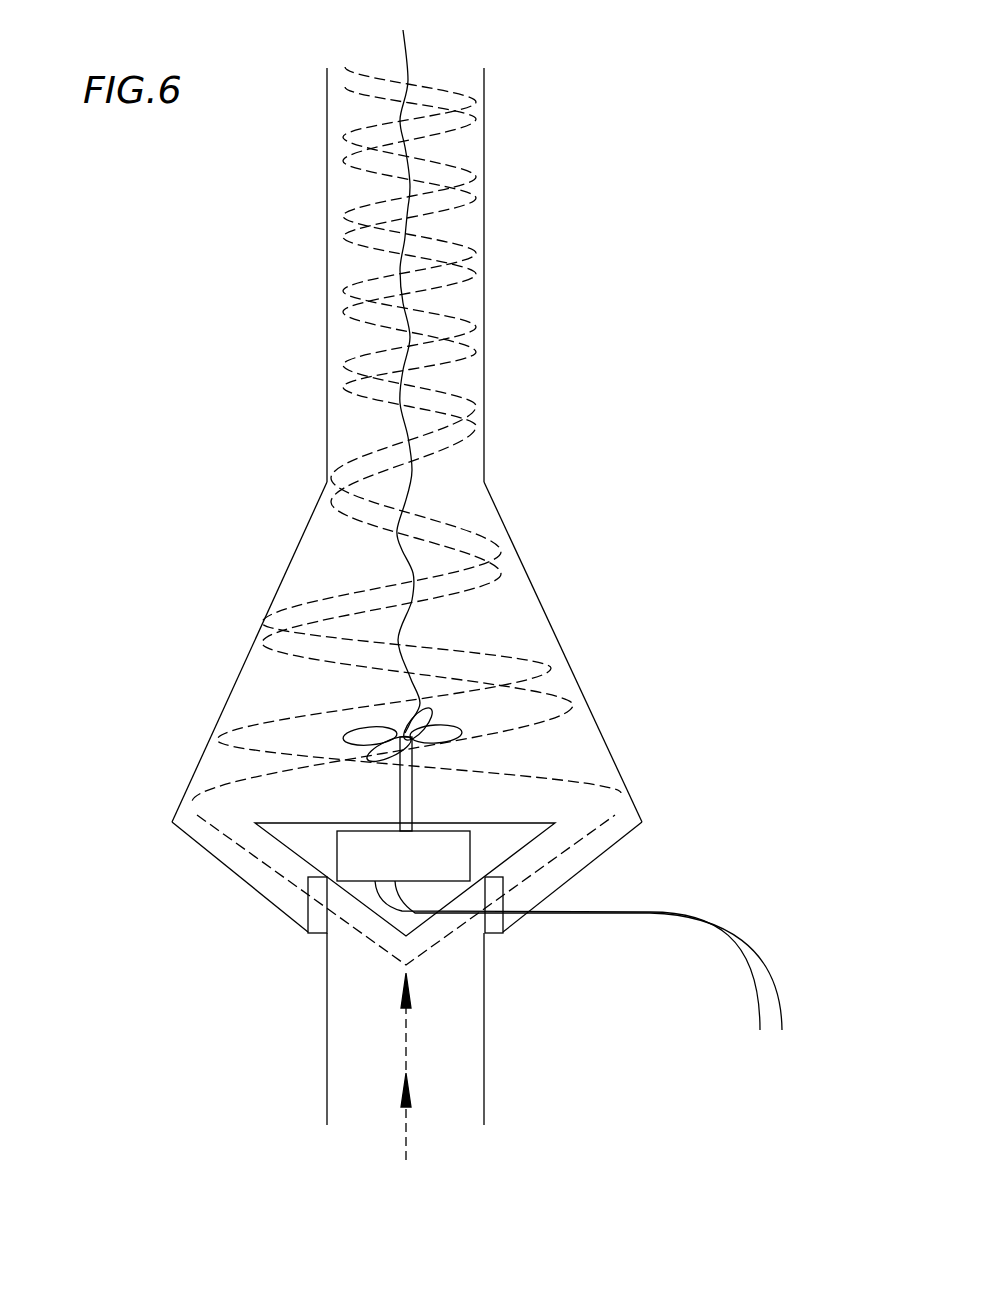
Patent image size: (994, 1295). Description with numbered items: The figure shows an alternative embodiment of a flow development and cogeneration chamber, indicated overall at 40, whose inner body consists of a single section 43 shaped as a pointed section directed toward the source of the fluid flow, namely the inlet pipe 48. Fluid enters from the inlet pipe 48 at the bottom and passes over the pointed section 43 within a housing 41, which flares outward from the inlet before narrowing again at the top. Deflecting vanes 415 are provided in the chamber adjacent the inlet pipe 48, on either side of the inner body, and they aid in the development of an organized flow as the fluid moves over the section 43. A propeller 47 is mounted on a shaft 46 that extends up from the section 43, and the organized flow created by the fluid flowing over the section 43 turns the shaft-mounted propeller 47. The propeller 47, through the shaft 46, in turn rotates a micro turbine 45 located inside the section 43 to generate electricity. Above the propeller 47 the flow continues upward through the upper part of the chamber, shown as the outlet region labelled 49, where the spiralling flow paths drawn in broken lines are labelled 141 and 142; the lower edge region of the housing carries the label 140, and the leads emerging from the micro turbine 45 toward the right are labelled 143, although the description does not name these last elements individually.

The flow guiding device 40 is at (474, 652).
The housing 41 is at (615, 762).
The single section of inner body 43 is at (290, 830).
The micro turbine 45 is at (333, 855).
The shaft 46 is at (413, 805).
The propeller 47 is at (362, 733).
The inlet pipe 48 is at (484, 1022).
The outlet pipe 49 is at (484, 296).
The housing bottom edge 140 is at (190, 805).
The first spiral flow path 141 is at (450, 138).
The second spiral flow path 142 is at (412, 227).
The electric wires 143 is at (707, 922).
The deflecting vanes 415 is at (313, 935).